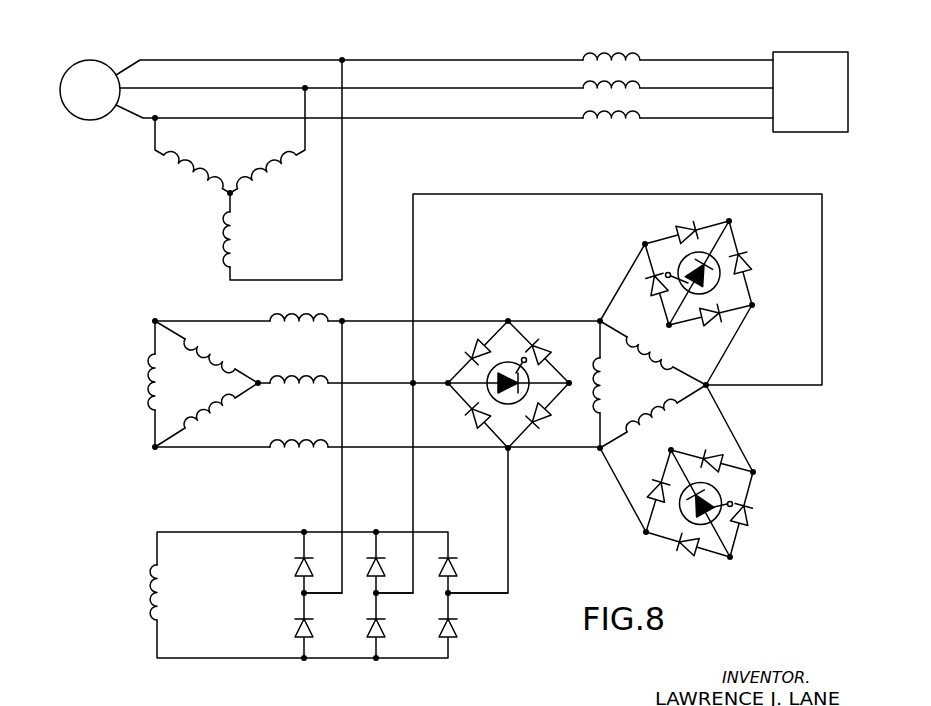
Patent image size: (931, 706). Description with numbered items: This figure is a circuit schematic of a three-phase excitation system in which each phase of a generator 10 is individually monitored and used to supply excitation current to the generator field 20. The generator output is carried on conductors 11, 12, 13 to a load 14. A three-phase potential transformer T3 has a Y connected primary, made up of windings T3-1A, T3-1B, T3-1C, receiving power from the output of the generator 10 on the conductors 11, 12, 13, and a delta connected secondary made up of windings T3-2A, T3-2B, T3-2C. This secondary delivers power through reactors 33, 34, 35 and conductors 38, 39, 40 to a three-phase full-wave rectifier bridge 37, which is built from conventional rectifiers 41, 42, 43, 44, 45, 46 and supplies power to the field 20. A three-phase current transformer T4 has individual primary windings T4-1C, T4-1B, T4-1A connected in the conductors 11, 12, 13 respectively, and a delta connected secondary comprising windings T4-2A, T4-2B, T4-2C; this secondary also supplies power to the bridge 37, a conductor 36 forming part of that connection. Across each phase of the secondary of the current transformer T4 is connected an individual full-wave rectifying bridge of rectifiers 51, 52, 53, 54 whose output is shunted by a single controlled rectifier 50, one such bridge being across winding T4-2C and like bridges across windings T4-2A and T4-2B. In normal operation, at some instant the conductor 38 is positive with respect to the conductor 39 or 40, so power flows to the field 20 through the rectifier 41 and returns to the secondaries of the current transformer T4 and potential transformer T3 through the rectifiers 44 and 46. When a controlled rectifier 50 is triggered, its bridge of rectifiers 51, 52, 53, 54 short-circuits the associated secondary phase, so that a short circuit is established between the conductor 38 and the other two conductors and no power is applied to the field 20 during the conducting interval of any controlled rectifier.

The generator 10 is at (72, 60).
The conductor 11 is at (154, 58).
The conductor 12 is at (154, 87).
The conductor 13 is at (148, 117).
The load 14 is at (805, 49).
The field 20 is at (123, 613).
The reactor 33 is at (311, 313).
The reactor 34 is at (298, 372).
The reactor 35 is at (280, 449).
The conductor 36 is at (413, 244).
The three-phase full-wave rectifier bridge 37 is at (348, 693).
The conductor 38 is at (377, 319).
The conductor 39 is at (398, 382).
The conductor 40 is at (366, 447).
The conventional rectifier 41 is at (293, 567).
The rectifier diode 42 is at (293, 628).
The rectifier diode 43 is at (366, 568).
The conventional rectifier 44 is at (367, 628).
The rectifier diode 45 is at (458, 566).
The conventional rectifier 46 is at (438, 628).
The controlled rectifier 50 is at (496, 403).
The rectifier 51 is at (470, 348).
The rectifier 52 is at (543, 424).
The rectifier 53 is at (467, 426).
The rectifier 54 is at (543, 345).
The three-phase potential transformer T3 is at (167, 266).
The transformer T3 primary winding T3-1A is at (193, 156).
The transformer T3 primary winding T3-1B is at (280, 183).
The transformer T3 primary winding T3-1C is at (234, 234).
The transformer T3 secondary winding T3-2A is at (208, 339).
The transformer T3 secondary winding T3-2B is at (226, 415).
The transformer T3 secondary winding T3-2C is at (146, 394).
The three-phase current transformer T4 is at (642, 394).
The primary winding T4-1A is at (628, 114).
The primary winding T4-1B is at (628, 84).
The primary winding T4-1C is at (626, 50).
The transformer T4 secondary winding T4-2A is at (690, 350).
The transformer T4 secondary winding T4-2B is at (654, 432).
The secondary winding T4-2C is at (590, 430).